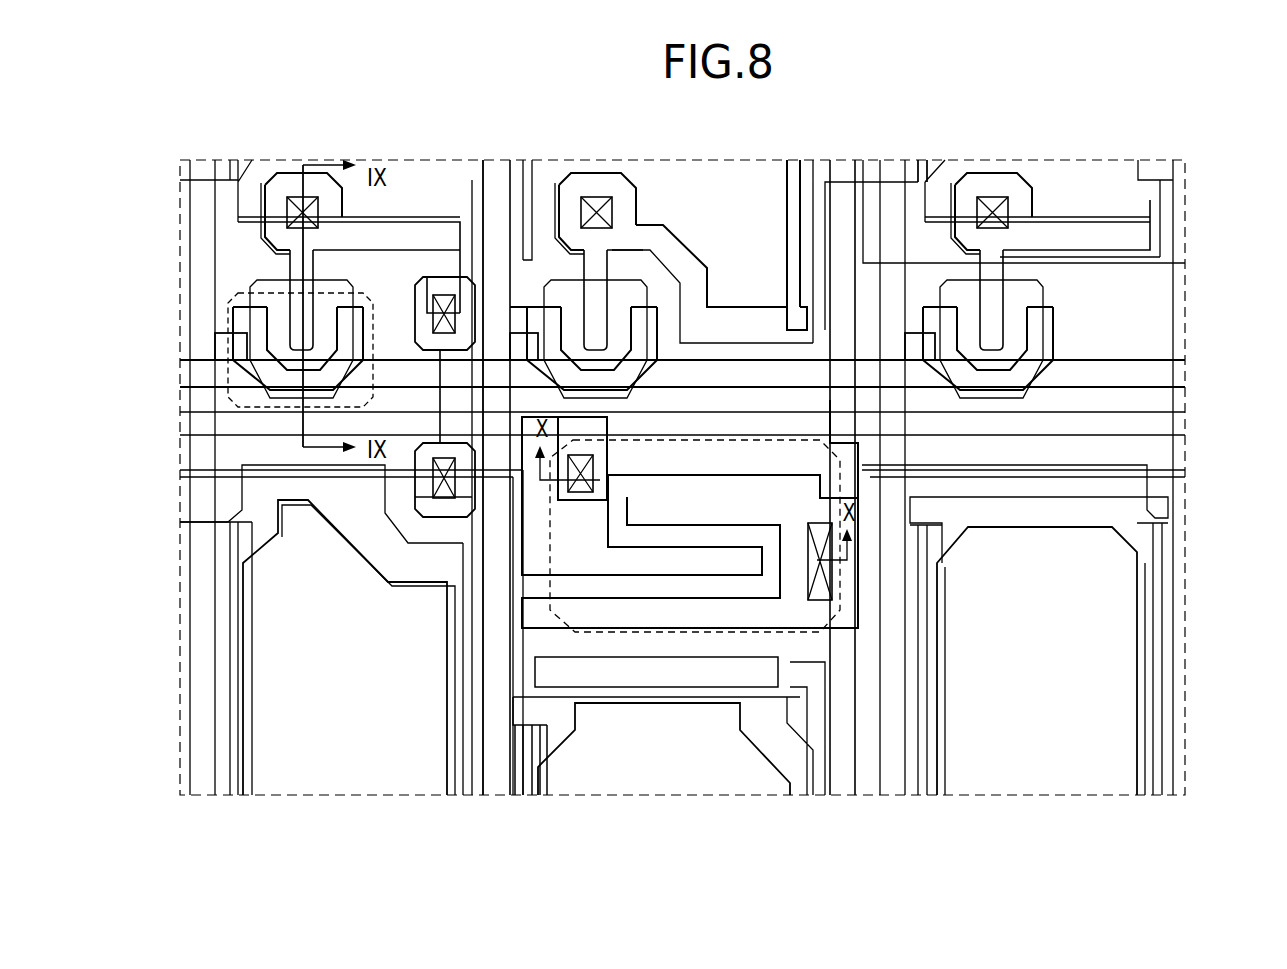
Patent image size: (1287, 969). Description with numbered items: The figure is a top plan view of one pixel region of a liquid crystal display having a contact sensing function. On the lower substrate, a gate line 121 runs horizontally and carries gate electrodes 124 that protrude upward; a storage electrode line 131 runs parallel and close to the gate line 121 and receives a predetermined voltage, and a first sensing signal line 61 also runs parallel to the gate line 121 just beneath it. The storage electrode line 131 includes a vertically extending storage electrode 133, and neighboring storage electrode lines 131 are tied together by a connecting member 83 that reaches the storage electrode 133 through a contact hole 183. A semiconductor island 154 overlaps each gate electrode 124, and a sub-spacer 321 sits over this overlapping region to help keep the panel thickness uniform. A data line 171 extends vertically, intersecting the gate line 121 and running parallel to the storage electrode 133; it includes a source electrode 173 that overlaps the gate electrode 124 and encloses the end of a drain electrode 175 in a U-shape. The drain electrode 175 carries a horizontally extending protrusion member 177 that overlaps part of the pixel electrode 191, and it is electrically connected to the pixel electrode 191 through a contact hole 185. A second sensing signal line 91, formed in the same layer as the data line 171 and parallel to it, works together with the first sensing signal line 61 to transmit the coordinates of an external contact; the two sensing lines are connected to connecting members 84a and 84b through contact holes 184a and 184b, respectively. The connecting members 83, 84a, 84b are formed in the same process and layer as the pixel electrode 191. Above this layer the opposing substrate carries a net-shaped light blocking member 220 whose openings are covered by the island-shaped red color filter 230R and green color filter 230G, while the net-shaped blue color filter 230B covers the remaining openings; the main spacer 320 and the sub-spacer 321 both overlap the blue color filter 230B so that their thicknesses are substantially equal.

The contact hole 183 is at (370, 283).
The connecting member 83 is at (427, 318).
The storage electrode 133 is at (477, 192).
The drain electrode 175 is at (580, 270).
The contact hole 185 is at (596, 197).
The semiconductor island 154 is at (627, 278).
The source electrode 173 is at (688, 440).
The connecting member 84a is at (733, 440).
The protrusion member 177 is at (779, 305).
The gate electrode 124 is at (1043, 278).
The green color filter 230G is at (240, 222).
The blue color filter 230B is at (287, 470).
The red color filter 230R is at (1153, 198).
The sub-spacer 321 is at (228, 347).
The gate line 121 is at (1103, 385).
The first sensing signal line 61 is at (1153, 435).
The storage electrode line 131 is at (303, 478).
The contact hole 184a is at (580, 493).
The contact hole 184b is at (820, 600).
The light blocking member 220 is at (243, 694).
The data line 171 is at (497, 790).
The main spacer 320 is at (625, 633).
The connecting member 84b is at (665, 795).
The second sensing signal line 91 is at (842, 782).
The pixel electrode 191 is at (917, 747).